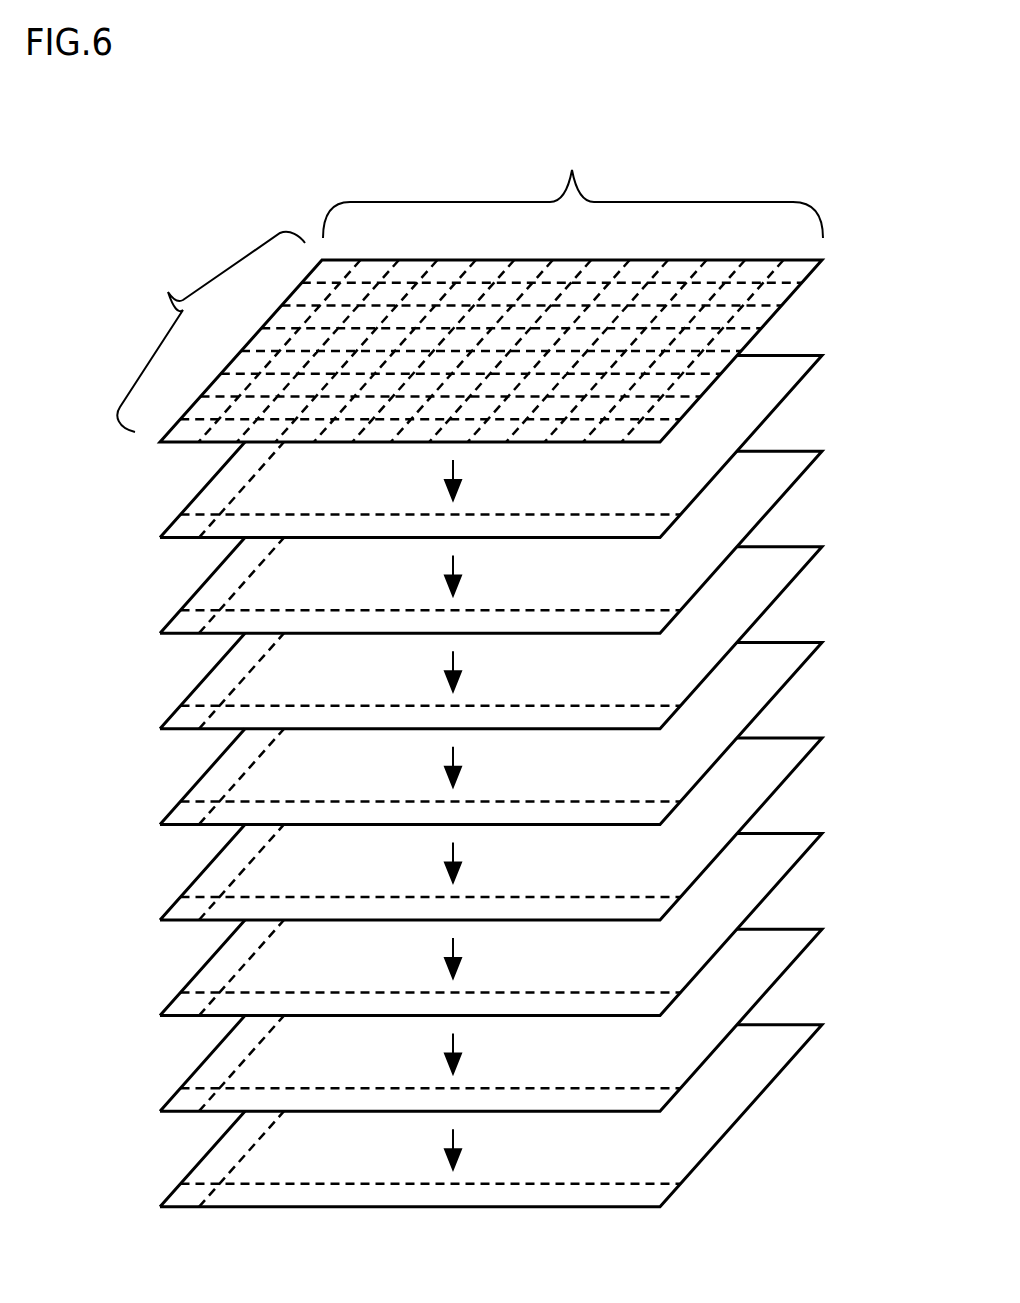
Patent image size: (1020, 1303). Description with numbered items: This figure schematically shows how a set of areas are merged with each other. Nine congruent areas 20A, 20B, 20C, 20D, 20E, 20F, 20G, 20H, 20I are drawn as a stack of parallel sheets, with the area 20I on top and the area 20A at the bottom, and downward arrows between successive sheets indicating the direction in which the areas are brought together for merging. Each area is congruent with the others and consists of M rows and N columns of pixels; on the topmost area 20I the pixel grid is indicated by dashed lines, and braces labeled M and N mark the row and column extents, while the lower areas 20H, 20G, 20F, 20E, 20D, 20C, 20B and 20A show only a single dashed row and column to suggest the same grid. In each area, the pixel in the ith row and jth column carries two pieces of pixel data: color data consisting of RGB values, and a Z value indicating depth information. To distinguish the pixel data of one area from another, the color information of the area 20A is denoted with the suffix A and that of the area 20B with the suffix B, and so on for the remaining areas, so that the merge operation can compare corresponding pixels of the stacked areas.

The area 20A is at (538, 1113).
The area 20B is at (538, 1017).
The area 20C is at (538, 922).
The area 20D is at (538, 826).
The area 20E is at (538, 730).
The area 20F is at (538, 635).
The area 20G is at (538, 539).
The area 20H is at (538, 444).
The area 20I is at (535, 348).
The number of rows M is at (211, 332).
The number of columns N is at (573, 176).